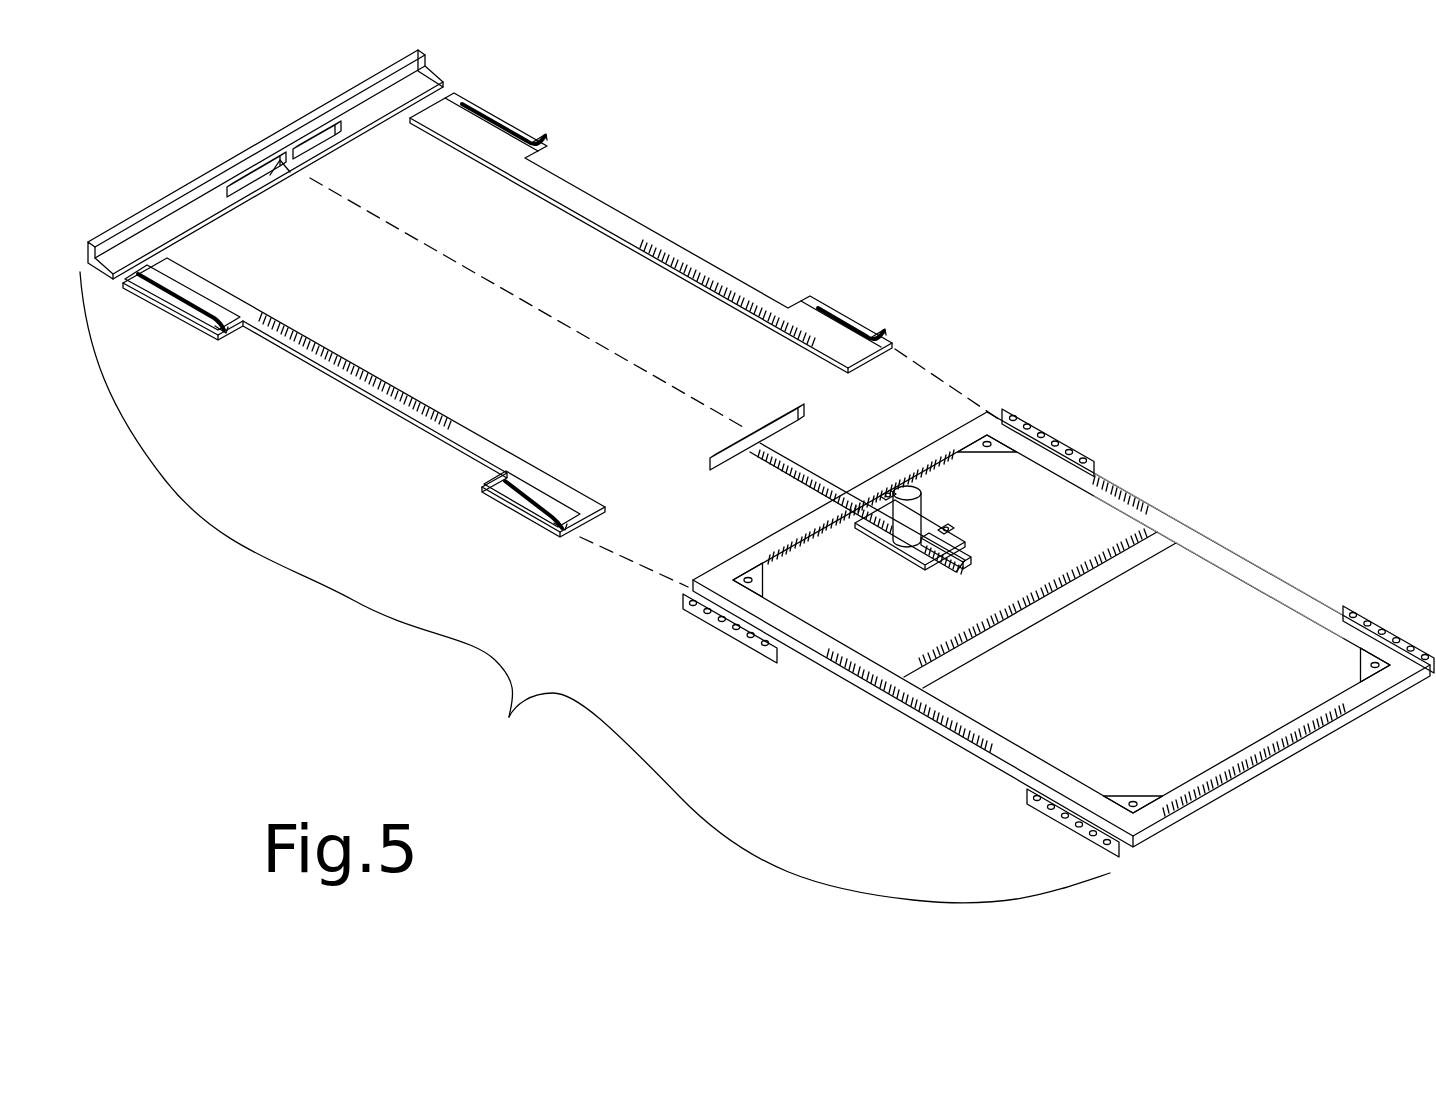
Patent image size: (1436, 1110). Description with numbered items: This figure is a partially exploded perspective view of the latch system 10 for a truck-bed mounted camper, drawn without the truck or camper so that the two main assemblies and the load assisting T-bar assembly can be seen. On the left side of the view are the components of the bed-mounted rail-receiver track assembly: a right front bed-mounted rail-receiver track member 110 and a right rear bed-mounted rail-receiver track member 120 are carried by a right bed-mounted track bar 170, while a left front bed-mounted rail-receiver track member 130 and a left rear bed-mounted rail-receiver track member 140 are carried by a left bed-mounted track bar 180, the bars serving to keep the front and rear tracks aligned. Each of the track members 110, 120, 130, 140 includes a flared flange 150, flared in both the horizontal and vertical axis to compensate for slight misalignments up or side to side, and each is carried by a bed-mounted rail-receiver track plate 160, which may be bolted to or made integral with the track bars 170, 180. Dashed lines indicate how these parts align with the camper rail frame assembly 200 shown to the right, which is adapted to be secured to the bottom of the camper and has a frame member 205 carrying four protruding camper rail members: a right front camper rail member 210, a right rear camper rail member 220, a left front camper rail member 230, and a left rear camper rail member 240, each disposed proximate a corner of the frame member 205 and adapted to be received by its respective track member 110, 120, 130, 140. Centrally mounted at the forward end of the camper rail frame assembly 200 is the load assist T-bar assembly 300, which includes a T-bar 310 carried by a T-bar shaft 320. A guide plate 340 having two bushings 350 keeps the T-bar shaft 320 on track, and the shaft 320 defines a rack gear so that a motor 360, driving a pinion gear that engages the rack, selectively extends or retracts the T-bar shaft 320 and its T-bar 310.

The latch system 10 is at (509, 717).
The right front bed-mounted rail-receiver track member 110 is at (513, 130).
The right rear bed-mounted rail-receiver track member 120 is at (822, 307).
The left front bed-mounted rail-receiver track member 130 is at (178, 290).
The left rear bed-mounted rail-receiver track member 140 is at (490, 487).
The flange 150 is at (543, 137).
The bed-mounted rail-receiver track plate 160 is at (468, 133).
The right bed-mounted track bar 170 is at (635, 236).
The left bed-mounted track bar 180 is at (357, 388).
The camper rail frame assembly 200 is at (1061, 629).
The frame member 205 is at (1238, 582).
The right front camper rail member 210 is at (1052, 432).
The right rear camper rail member 220 is at (1393, 627).
The left front camper rail member 230 is at (727, 620).
The left rear camper rail member 240 is at (1070, 822).
The load assist T-bar assembly 300 is at (821, 502).
The T-bar 310 is at (716, 462).
The T-bar shaft 320 is at (790, 448).
The guide plate 340 is at (923, 553).
The bushing 350 is at (888, 498).
The motor 360 is at (906, 523).